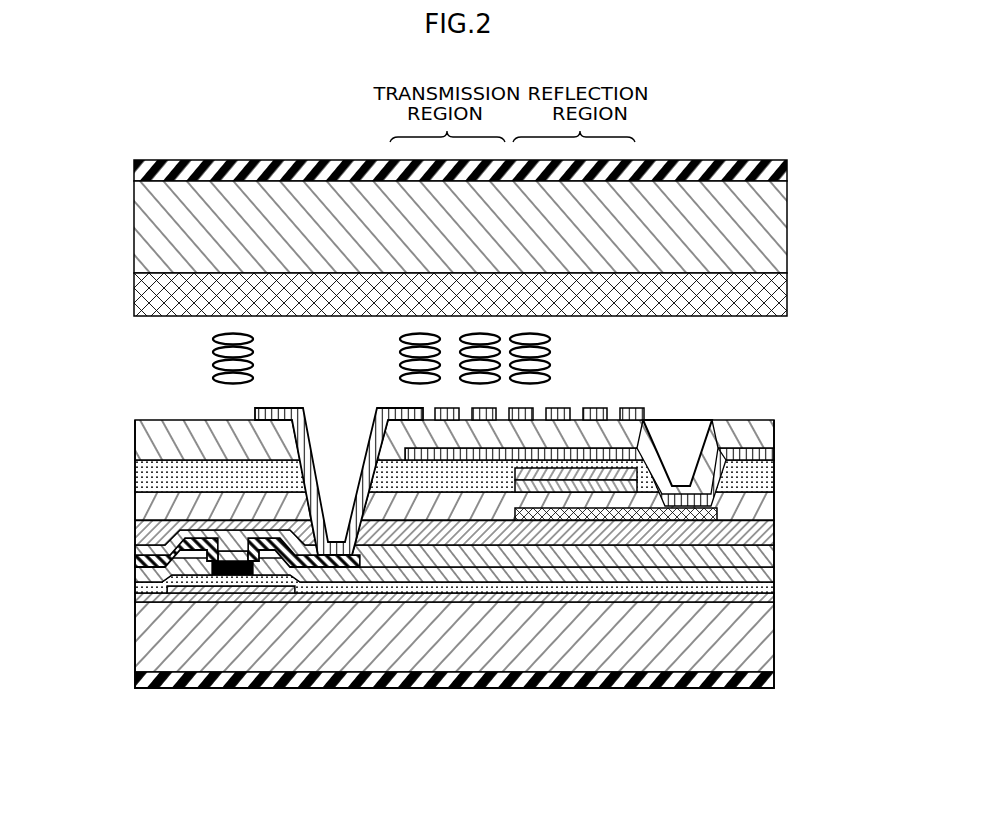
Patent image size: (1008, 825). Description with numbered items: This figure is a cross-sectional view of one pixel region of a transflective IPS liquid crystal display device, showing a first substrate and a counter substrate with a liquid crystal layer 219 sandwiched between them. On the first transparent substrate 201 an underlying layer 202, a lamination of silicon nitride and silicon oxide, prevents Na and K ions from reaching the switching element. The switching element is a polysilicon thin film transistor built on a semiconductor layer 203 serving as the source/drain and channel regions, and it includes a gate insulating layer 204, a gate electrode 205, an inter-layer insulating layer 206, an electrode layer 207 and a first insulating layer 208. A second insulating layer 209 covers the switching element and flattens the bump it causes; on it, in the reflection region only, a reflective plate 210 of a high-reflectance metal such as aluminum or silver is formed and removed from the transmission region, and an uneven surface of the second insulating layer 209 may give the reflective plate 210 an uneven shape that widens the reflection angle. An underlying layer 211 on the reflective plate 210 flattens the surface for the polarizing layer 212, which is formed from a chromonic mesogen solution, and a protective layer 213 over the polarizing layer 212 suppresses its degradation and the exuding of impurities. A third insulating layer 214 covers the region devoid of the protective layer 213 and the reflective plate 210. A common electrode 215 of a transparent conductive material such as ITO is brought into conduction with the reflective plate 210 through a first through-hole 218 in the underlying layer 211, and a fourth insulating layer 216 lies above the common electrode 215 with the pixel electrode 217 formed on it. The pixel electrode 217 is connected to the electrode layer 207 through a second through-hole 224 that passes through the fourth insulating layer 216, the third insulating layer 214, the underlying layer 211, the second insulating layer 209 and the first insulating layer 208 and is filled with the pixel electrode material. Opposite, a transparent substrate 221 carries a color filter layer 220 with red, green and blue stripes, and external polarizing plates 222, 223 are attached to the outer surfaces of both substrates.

The first transparent substrate 201 is at (768, 638).
The underlying layer 202 is at (775, 592).
The semiconductor layer 203 is at (232, 594).
The gate insulating layer 204 is at (133, 587).
The gate electrode 205 is at (205, 572).
The inter-layer insulating layer 206 is at (133, 580).
The electrode layer 207 is at (133, 563).
The first insulating layer 208 is at (133, 548).
The second insulating layer 209 is at (133, 522).
The reflective plate 210 is at (722, 512).
The underlying layer 211 is at (775, 503).
The polarizing layer 212 is at (625, 483).
The protective layer 213 is at (605, 472).
The third insulating layer 214 is at (775, 478).
The common electrode 215 is at (775, 453).
The fourth insulating layer 216 is at (775, 430).
The pixel electrode 217 is at (552, 407).
The first through-hole 218 is at (685, 423).
The liquid crystal layer 219 is at (210, 356).
The color filter layer 220 is at (780, 298).
The transparent substrate 221 is at (780, 228).
The external polarizing plate 222 is at (772, 675).
The external polarizing plate 223 is at (787, 173).
The second through-hole 224 is at (343, 425).